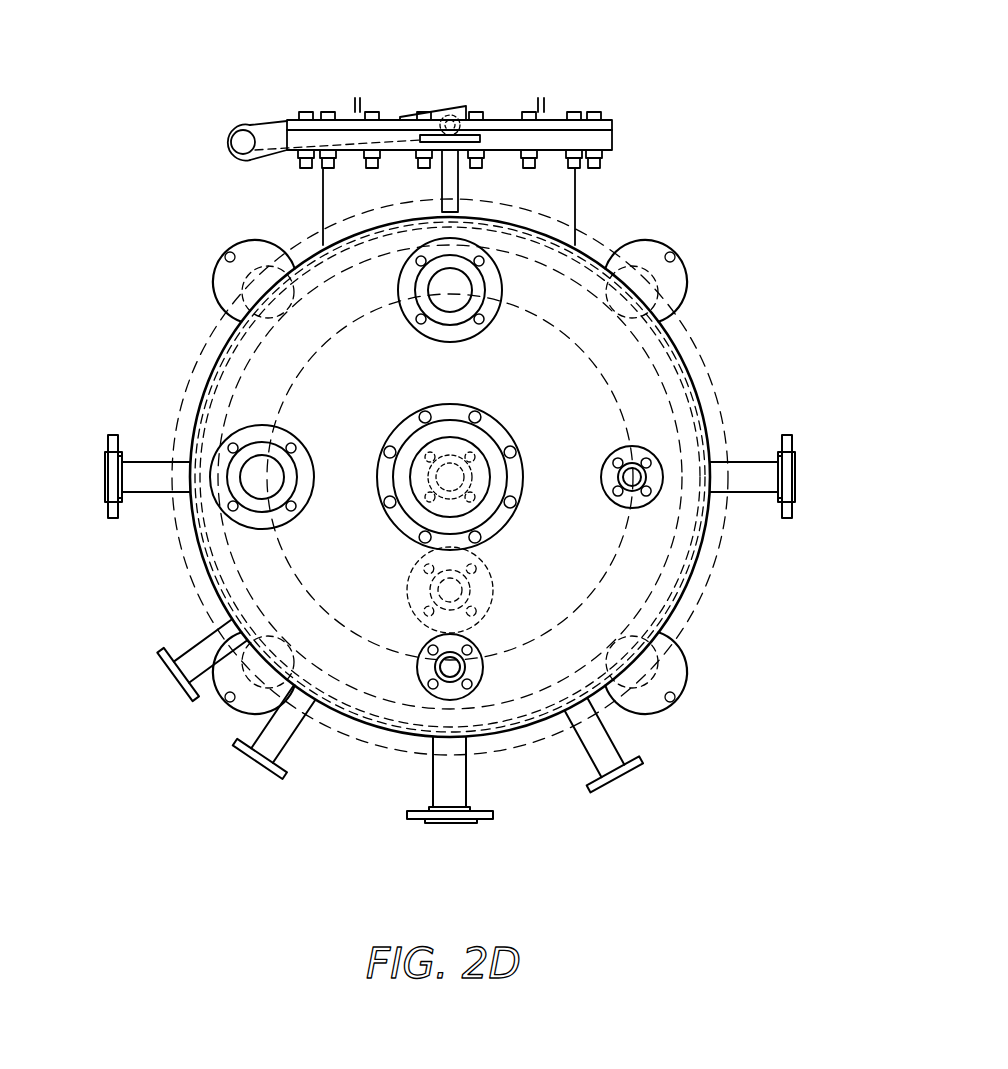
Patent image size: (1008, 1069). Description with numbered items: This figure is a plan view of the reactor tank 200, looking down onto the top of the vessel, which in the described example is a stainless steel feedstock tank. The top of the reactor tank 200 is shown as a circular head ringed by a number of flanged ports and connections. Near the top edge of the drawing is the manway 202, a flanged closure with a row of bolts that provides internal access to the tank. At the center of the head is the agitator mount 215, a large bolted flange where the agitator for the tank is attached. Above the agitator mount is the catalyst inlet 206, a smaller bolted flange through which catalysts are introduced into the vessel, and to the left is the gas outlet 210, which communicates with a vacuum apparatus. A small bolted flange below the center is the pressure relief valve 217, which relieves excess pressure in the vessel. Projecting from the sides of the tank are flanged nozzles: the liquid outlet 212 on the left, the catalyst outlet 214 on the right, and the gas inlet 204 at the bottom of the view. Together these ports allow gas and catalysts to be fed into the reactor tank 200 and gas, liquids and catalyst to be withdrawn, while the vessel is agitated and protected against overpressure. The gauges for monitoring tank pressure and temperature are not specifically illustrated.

The reactor tank 200 is at (207, 582).
The manway 202 is at (560, 120).
The gas inlet 204 is at (442, 823).
The catalyst inlet 206 is at (459, 258).
The gas outlet 210 is at (250, 428).
The liquid outlet 212 is at (105, 482).
The catalyst outlet 214 is at (795, 478).
The agitator mount 215 is at (505, 438).
The pressure relief valve 217 is at (417, 673).